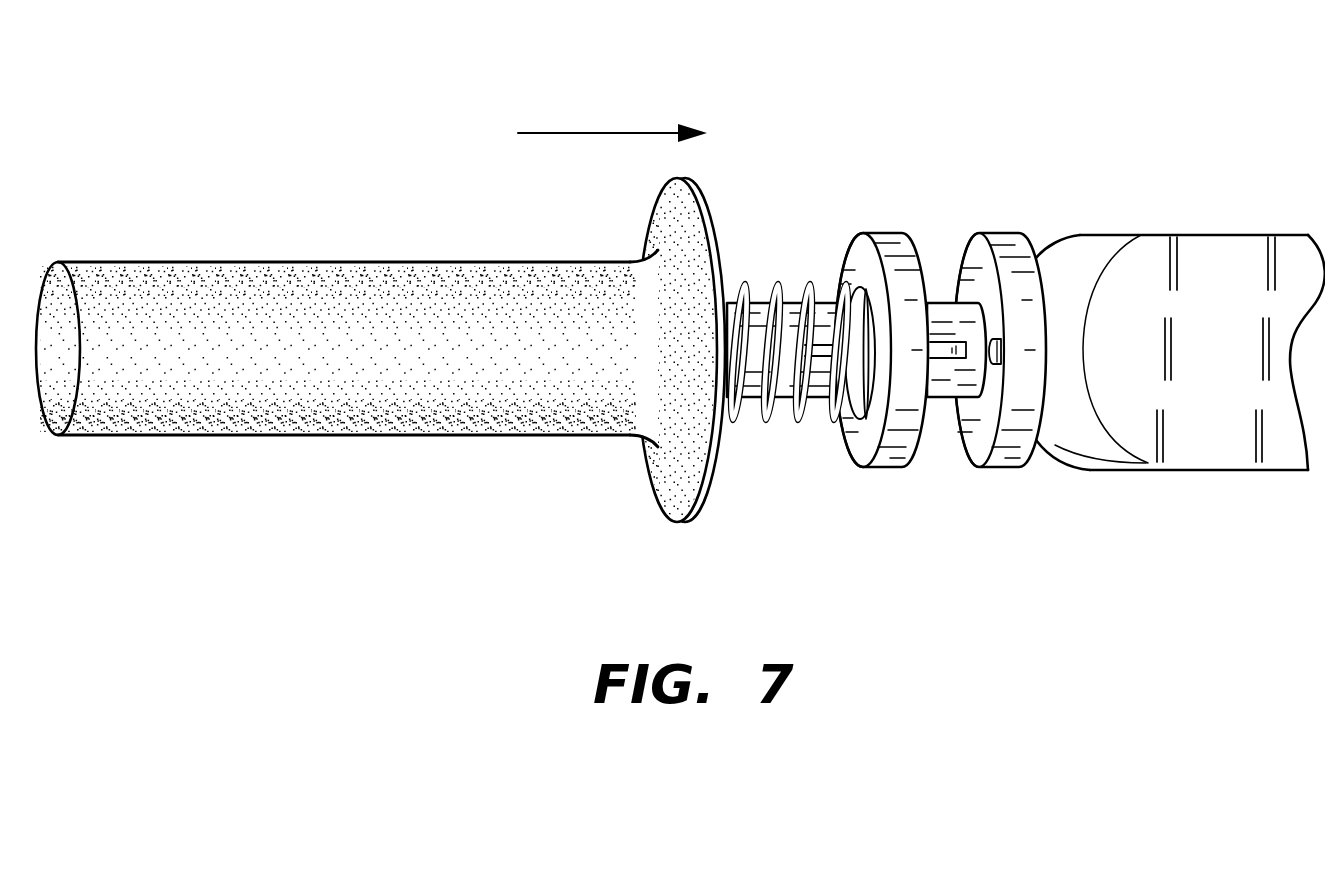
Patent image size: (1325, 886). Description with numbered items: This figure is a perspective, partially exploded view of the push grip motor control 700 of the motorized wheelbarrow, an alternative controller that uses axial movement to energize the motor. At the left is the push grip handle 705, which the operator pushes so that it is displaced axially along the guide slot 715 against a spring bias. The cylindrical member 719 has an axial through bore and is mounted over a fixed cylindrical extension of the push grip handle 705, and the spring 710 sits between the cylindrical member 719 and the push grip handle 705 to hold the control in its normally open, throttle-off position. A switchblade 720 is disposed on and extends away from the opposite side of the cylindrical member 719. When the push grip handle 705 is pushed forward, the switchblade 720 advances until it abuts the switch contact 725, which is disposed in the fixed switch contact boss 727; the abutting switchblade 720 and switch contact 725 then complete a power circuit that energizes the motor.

The push grip motor control 700 is at (466, 120).
The push grip handle 705 is at (358, 268).
The spring 710 is at (808, 296).
The guide slot 715 is at (813, 400).
The cylindrical member 719 is at (852, 248).
The switchblade 720 is at (941, 344).
The switch contact 725 is at (990, 363).
The switch contact boss 727 is at (1023, 248).